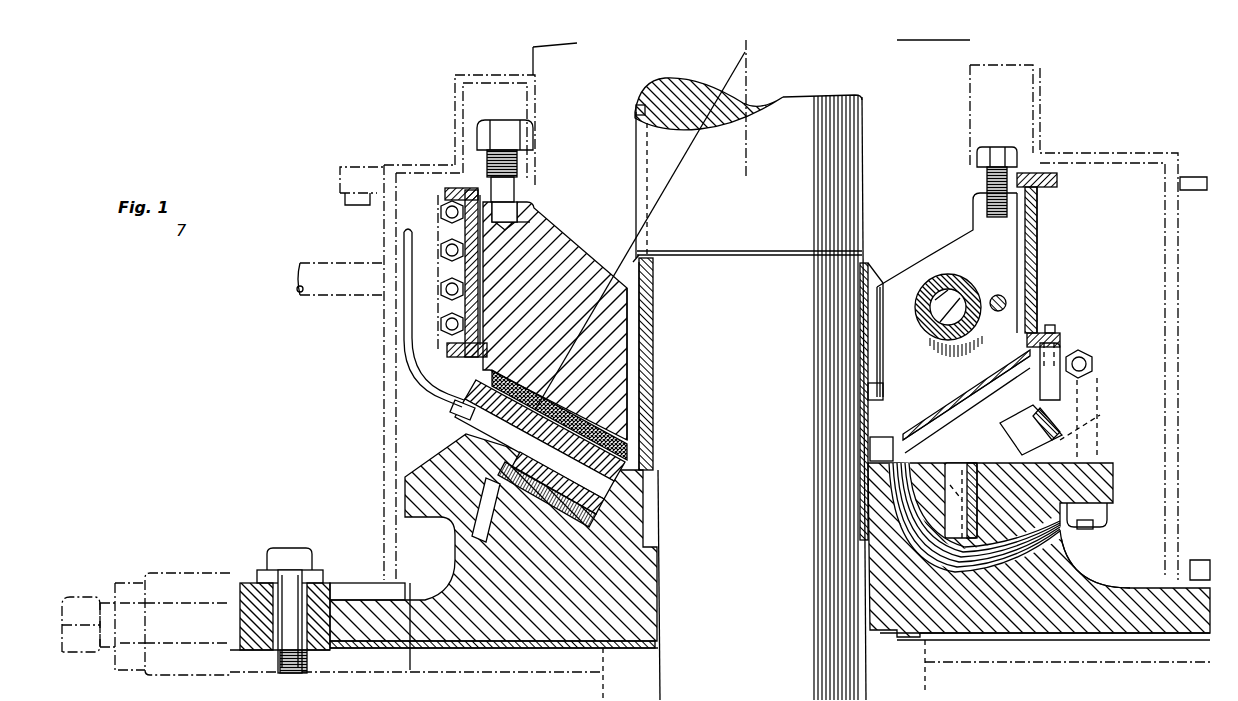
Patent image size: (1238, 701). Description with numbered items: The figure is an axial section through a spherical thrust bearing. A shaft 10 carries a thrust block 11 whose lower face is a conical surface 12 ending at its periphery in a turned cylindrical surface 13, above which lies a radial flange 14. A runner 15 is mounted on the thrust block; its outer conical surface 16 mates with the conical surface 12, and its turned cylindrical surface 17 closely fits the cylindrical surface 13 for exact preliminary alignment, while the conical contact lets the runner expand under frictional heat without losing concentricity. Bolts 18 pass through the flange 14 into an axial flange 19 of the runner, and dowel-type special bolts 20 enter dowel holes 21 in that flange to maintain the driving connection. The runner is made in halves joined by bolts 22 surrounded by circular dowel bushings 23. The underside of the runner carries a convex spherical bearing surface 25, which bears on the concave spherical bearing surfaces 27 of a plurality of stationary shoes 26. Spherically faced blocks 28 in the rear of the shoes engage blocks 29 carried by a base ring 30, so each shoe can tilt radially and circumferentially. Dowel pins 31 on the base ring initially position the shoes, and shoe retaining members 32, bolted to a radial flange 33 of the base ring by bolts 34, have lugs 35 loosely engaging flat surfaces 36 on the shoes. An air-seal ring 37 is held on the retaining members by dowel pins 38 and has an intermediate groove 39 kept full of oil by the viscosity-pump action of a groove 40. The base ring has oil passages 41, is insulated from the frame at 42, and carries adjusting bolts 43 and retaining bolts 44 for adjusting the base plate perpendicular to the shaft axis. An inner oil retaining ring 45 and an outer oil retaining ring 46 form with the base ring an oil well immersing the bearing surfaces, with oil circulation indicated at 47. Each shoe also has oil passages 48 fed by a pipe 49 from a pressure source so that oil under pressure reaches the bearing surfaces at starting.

The shaft 10 is at (676, 690).
The thrust block 11 is at (955, 64).
The conical surface 12 is at (533, 228).
The turned cylindrical surface 13 is at (530, 221).
The radial flange 14 is at (485, 196).
The runner 15 is at (651, 343).
The conical surface 16 is at (640, 231).
The turned cylindrical surface 17 is at (532, 227).
The bolts 18 is at (1008, 158).
The axial flange 19 is at (1012, 208).
The special bolts 20 is at (512, 136).
The dowel holes 21 is at (493, 212).
The bolts 22 is at (1032, 284).
The circular dowel bushings 23 is at (957, 306).
The convex spherical bearing surface 25 is at (622, 395).
The shoes 26 is at (588, 458).
The concave spherical bearing surfaces 27 is at (618, 432).
The spherically faced blocks 28 is at (592, 478).
The blocks 29 is at (600, 512).
The base ring 30 is at (592, 546).
The dowel pins 31 is at (958, 520).
The shoe retaining members 32 is at (1050, 383).
The radial flange 33 is at (1105, 481).
The bolts 34 is at (1045, 448).
The lugs 35 is at (1018, 428).
The flat surfaces 36 is at (1098, 486).
The air-seal ring 37 is at (1035, 262).
The dowel pins 38 is at (1050, 326).
The intermediate groove 39 is at (1040, 247).
The groove 40 is at (1005, 303).
The passages 41 is at (1084, 574).
The insulation 42 is at (987, 641).
The adjusting bolts 43 is at (88, 600).
The retaining bolts 44 is at (295, 557).
The inner oil retaining ring 45 is at (641, 373).
The outer oil retaining ring 46 is at (396, 432).
The oil circulation provision 47 is at (343, 288).
The oil passages 48 is at (450, 445).
The pipe 49 is at (405, 242).